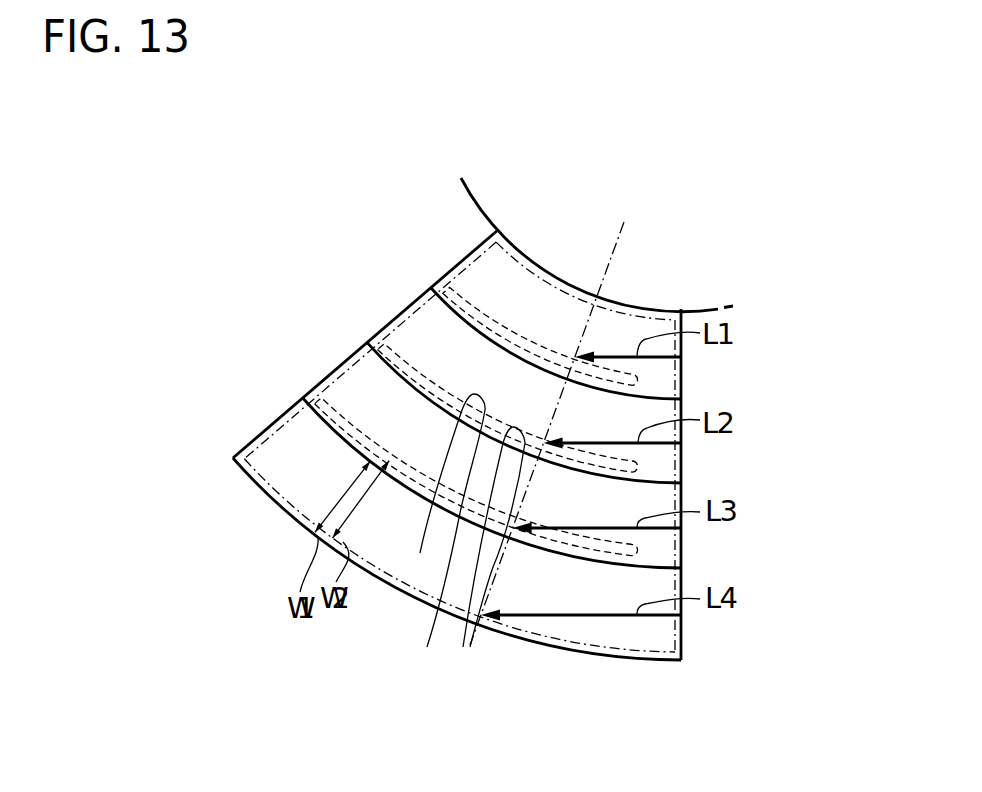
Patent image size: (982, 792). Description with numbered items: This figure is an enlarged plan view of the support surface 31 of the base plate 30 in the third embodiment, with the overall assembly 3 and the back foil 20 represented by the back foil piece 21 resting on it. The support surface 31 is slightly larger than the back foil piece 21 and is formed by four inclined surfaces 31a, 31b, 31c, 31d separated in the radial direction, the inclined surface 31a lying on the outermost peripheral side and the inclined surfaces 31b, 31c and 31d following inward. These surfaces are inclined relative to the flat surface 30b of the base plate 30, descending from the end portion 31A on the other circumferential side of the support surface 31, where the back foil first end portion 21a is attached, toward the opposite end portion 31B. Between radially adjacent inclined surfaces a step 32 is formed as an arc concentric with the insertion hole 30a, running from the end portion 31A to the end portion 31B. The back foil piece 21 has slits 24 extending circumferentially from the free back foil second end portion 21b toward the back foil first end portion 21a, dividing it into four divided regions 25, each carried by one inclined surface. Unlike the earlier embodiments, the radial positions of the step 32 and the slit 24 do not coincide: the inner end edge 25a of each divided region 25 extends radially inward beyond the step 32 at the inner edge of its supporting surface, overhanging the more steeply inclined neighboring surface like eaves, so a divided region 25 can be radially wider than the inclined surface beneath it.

The coil 3 is at (323, 147).
The insulator 20 is at (533, 636).
The back foil piece 21 is at (459, 447).
The back foil first end portion 21a is at (677, 545).
The back foil second end portion 21b is at (271, 462).
The slit 24 is at (388, 620).
The divided region 25 is at (250, 437).
The inner end edge 25a is at (363, 598).
The base plate 30 is at (462, 176).
The insertion hole 30a is at (692, 308).
The flat surface 30b is at (714, 371).
The support surface 31 is at (394, 179).
The inclined surface 31a is at (290, 460).
The inclined surface 31b is at (360, 396).
The inclined surface 31c is at (410, 343).
The inclined surface 31d is at (478, 281).
The end portion on the other side of the support surface in the circumferential dire 31A is at (683, 470).
The end portion on one side of the support surface in the circumferential direction 31B is at (380, 346).
The step 32 is at (423, 647).